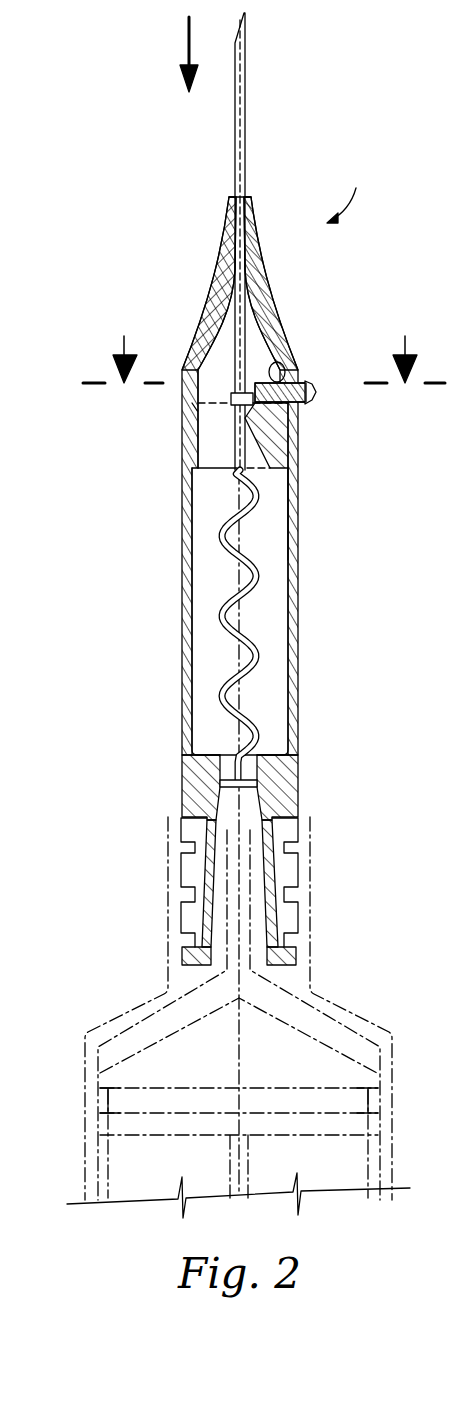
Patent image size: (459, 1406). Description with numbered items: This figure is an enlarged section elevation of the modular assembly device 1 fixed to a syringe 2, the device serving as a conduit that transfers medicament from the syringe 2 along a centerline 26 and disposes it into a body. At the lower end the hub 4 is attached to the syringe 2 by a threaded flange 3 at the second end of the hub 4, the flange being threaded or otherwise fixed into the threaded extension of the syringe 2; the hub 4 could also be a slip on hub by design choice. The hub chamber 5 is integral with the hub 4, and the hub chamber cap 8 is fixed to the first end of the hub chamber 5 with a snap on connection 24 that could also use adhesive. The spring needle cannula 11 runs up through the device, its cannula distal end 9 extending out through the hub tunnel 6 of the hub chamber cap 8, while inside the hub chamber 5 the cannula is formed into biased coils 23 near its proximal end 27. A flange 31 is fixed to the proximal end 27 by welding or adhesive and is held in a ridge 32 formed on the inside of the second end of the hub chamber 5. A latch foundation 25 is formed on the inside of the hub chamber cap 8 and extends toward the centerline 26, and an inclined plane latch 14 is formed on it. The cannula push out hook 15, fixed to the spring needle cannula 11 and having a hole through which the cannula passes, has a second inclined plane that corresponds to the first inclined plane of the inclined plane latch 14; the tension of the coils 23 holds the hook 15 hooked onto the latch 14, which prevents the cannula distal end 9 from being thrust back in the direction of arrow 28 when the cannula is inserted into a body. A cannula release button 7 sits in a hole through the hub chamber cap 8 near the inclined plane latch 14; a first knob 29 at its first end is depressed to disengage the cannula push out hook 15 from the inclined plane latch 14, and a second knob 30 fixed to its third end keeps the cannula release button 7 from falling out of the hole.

The modular assembly device 1 is at (349, 191).
The syringe 2 is at (83, 1072).
The threaded flange 3 is at (264, 345).
The hub 4 is at (205, 882).
The hub chamber 5 is at (295, 658).
The hub tunnel 6 is at (230, 223).
The cannula release button 7 is at (310, 407).
The hub chamber cap 8 is at (217, 270).
The cannula distal end 9 is at (243, 123).
The spring needle cannula 11 is at (222, 613).
The inclined plane latch 14 is at (293, 460).
The cannula push out hook 15 is at (233, 398).
The coils 23 is at (222, 533).
The snap on connection 24 is at (193, 458).
The latch foundation 25 is at (293, 497).
The centerline 26 is at (238, 920).
The proximal end 27 is at (247, 768).
The arrow 28 is at (187, 33).
The first knob 29 is at (312, 386).
The second knob 30 is at (275, 360).
The flange 31 is at (220, 790).
The ridge 32 is at (227, 773).